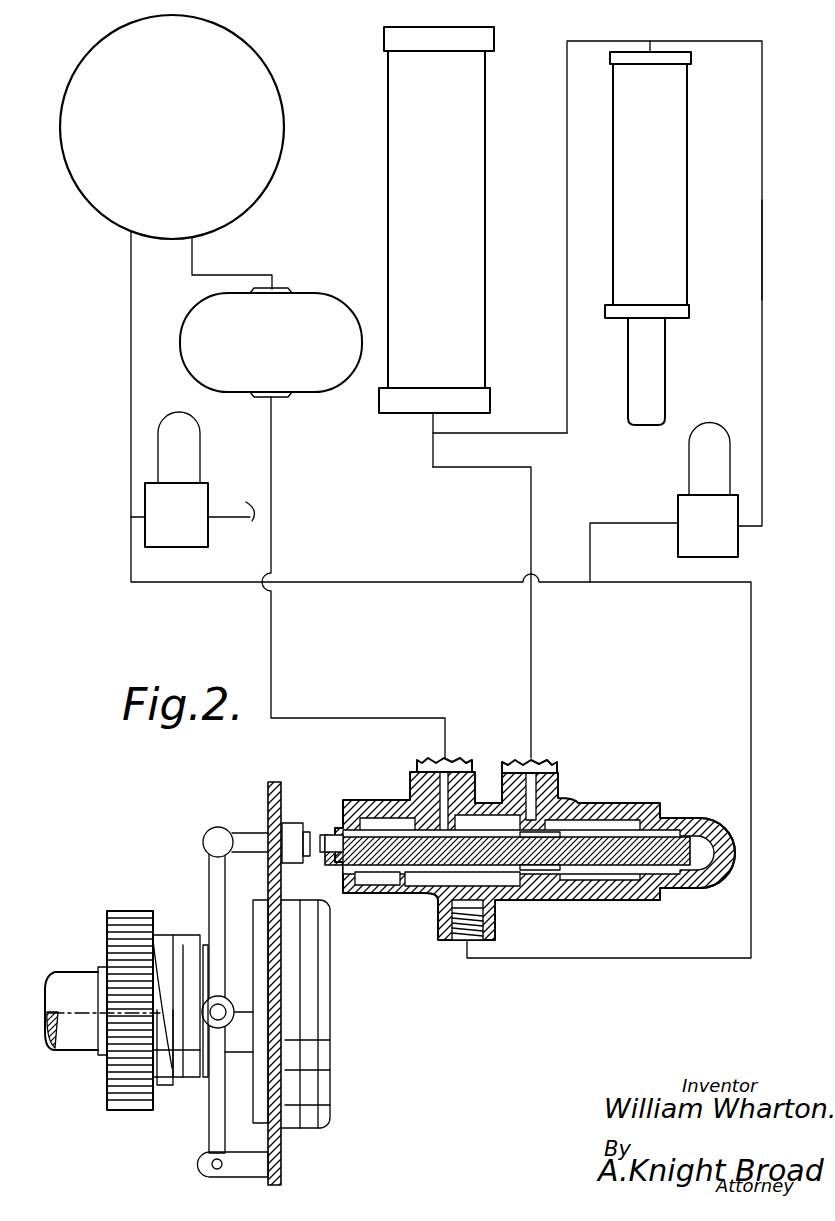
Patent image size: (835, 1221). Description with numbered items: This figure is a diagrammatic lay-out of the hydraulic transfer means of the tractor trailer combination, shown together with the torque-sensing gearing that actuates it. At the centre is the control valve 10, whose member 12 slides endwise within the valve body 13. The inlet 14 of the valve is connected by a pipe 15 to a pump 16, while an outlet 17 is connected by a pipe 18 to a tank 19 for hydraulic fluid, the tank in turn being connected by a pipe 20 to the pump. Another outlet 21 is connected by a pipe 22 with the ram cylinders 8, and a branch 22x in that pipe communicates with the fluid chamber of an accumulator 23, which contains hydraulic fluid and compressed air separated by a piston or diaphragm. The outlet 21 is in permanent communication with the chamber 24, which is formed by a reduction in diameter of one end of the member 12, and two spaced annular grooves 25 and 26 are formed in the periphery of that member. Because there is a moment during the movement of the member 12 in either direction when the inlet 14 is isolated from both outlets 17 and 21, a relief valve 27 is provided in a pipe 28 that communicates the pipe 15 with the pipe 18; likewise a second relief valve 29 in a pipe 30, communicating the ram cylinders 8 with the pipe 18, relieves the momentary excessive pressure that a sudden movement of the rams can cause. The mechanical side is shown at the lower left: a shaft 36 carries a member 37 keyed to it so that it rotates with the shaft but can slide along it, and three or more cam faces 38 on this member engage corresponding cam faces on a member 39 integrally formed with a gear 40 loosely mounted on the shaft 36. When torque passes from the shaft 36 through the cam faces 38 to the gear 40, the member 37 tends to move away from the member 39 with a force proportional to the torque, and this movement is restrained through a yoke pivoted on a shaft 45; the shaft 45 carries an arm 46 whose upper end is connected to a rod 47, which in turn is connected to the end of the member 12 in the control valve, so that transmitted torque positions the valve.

The cylinders 8 is at (668, 267).
The control valve 10 is at (580, 794).
The member 12 is at (390, 873).
The valve body 13 is at (626, 803).
The inlet 14 is at (432, 775).
The pipe 15 is at (272, 453).
The pump 16 is at (304, 304).
The outlet 17 is at (462, 936).
The pipe 18 is at (131, 478).
The tank 19 is at (265, 135).
The pipe 20 is at (245, 275).
The outlet 21 is at (548, 771).
The pipe 22 is at (567, 300).
The branch 22x is at (433, 425).
The accumulator 23 is at (468, 305).
The chamber 24 is at (590, 870).
The annular groove 25 is at (525, 870).
The annular groove 26 is at (428, 879).
The relief valve 27 is at (195, 505).
The pipe 28 is at (236, 506).
The second relief valve 29 is at (690, 510).
The pipe 30 is at (761, 278).
The shaft 36 is at (76, 983).
The member 37 is at (191, 1078).
The cam faces 38 is at (165, 1070).
The member 39 is at (165, 1086).
The gear 40 is at (131, 912).
The shaft 45 is at (209, 1166).
The arm 46 is at (213, 875).
The rod 47 is at (322, 840).